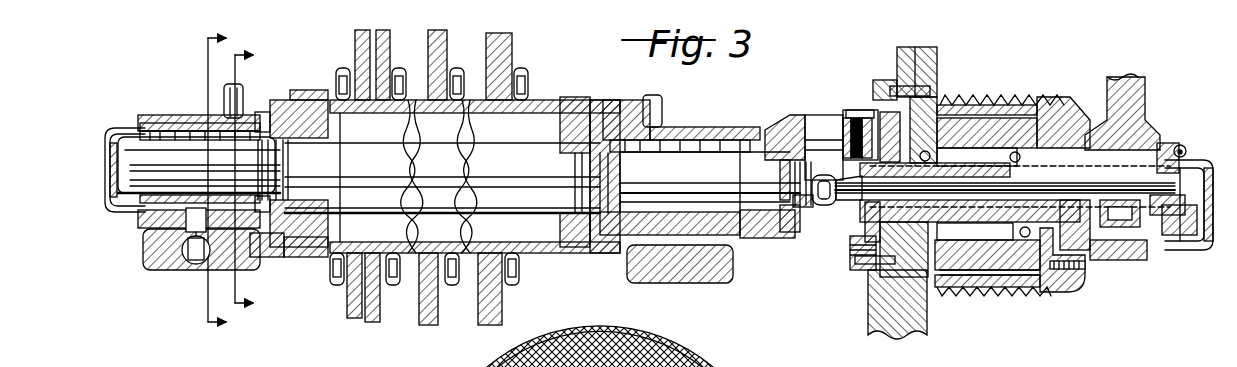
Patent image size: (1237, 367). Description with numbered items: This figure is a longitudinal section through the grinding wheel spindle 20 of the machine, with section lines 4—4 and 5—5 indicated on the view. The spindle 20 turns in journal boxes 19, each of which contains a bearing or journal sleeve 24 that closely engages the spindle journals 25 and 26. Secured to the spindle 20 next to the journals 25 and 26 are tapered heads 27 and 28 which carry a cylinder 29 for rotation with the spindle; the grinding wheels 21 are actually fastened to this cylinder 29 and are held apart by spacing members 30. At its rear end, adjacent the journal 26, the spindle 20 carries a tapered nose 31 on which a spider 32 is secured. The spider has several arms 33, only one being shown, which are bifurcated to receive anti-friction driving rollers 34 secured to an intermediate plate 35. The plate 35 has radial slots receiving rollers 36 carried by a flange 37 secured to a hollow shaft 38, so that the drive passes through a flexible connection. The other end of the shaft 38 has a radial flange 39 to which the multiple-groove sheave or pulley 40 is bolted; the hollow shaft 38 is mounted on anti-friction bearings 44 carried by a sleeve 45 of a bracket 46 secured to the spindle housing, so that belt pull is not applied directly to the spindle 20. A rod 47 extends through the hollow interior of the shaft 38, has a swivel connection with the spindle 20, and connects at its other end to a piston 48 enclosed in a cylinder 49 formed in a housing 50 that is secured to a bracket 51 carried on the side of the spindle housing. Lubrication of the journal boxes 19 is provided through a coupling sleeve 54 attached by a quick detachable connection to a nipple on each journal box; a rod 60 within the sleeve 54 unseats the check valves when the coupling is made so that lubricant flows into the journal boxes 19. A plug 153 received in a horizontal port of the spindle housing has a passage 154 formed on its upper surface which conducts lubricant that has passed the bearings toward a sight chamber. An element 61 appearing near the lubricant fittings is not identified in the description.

The section line 4- 4 is at (249, 183).
The section line 5- 5 is at (222, 184).
The journal boxes 19 is at (168, 115).
The grinding wheel spindle 20 is at (538, 158).
The grinding wheels 21 is at (362, 30).
The bearing or journal sleeve 24 is at (178, 115).
The spindle journal 25 is at (128, 215).
The spindle journal 26 is at (742, 235).
The tapered head 27 is at (290, 257).
The tapered head 28 is at (600, 258).
The cylinder 29 is at (562, 253).
The spacing members 30 is at (320, 270).
The tapered nose 31 is at (780, 238).
The spider 32 is at (792, 115).
The arms 33 is at (818, 120).
The anti-friction driving rollers 34 is at (855, 110).
The intermediate plate 35 is at (864, 228).
The rollers 36 is at (866, 270).
The flange 37 is at (878, 270).
The hollow driving shaft 38 is at (992, 296).
The radial flange 39 is at (1058, 293).
The sheave or pulley 40 is at (1070, 104).
The anti-friction bearings 44 is at (1005, 312).
The sleeve 45 is at (1005, 105).
The bracket 46 is at (937, 66).
The rod 47 is at (968, 272).
The piston 48 is at (1183, 145).
The cylinder 49 is at (1165, 143).
The housing 50 is at (1168, 250).
The bracket 51 is at (1140, 77).
The sleeve coupling 54 is at (245, 96).
The rod 60 is at (684, 346).
The ring web 61 is at (838, 366).
The plug 153 is at (196, 268).
The passage 154 is at (190, 262).